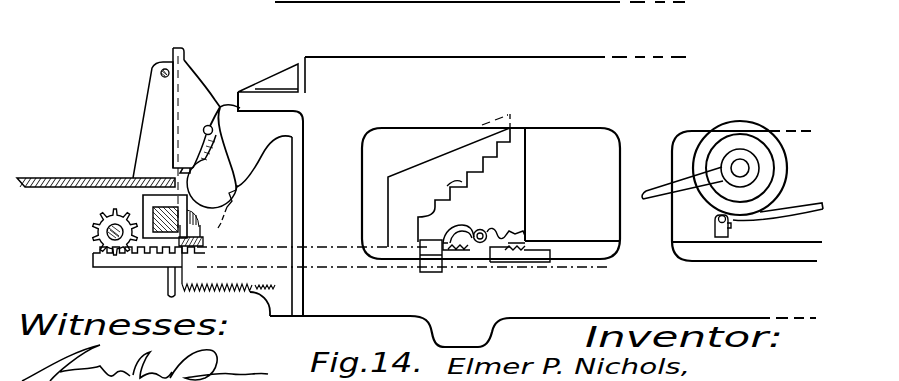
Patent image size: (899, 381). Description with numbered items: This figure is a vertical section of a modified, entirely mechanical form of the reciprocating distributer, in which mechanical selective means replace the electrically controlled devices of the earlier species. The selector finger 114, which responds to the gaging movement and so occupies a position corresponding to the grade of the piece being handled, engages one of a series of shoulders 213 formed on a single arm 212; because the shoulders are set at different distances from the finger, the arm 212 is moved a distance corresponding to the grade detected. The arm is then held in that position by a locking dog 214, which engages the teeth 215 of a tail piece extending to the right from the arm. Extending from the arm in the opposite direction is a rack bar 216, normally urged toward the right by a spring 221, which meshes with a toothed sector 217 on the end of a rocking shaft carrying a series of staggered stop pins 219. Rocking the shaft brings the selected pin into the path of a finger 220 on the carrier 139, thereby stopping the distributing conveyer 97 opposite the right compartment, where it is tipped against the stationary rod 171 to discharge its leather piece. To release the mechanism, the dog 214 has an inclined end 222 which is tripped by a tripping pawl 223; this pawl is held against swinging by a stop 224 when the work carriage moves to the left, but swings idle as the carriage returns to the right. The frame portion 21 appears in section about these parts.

The carriage frame 21 is at (509, 190).
The distributing conveyer 97 is at (185, 87).
The selector finger 114 is at (662, 184).
The carrier 139 is at (180, 199).
The stationary rod 171 is at (164, 69).
The arm 212 is at (404, 188).
The shoulders 213 is at (449, 190).
The locking dog 214 is at (457, 237).
The teeth 215 is at (510, 261).
The rack bar 216 is at (137, 269).
The toothed sector 217 is at (93, 246).
The stop pins 219 is at (100, 215).
The finger 220 is at (130, 205).
The spring 221 is at (220, 284).
The inclined end 222 is at (525, 235).
The tripping pawl 223 is at (732, 226).
The stop 224 is at (729, 221).